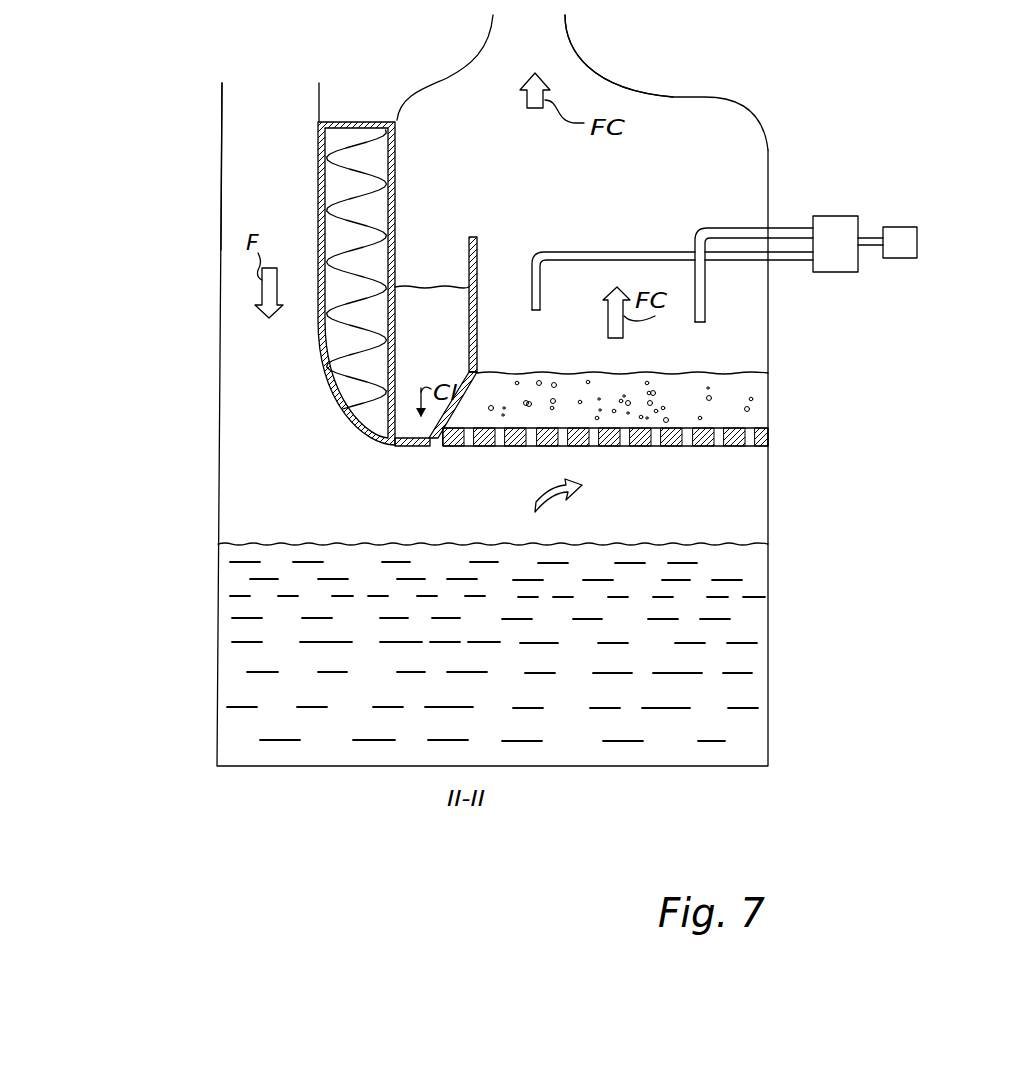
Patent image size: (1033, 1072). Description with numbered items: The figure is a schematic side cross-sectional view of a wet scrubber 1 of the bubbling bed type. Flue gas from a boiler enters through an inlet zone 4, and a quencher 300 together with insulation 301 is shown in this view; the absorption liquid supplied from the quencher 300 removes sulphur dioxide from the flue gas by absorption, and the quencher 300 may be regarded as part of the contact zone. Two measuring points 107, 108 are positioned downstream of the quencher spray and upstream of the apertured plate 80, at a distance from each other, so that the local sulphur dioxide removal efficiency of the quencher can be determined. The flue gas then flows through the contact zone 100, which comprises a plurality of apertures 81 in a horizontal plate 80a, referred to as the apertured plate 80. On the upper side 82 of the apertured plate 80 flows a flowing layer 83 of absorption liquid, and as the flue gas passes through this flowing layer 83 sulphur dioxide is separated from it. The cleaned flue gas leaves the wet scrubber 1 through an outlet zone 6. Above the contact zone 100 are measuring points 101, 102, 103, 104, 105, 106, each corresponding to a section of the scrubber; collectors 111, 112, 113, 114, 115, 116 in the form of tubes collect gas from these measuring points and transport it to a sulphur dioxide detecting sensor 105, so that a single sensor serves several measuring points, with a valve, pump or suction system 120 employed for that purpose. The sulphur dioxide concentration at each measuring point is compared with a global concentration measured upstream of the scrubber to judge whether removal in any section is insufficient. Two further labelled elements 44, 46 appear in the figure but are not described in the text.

The wet scrubber 1 is at (348, 803).
The inlet zone 4 is at (275, 103).
The outlet zone 6 is at (582, 67).
The liquid bath 44 is at (427, 610).
The plate support 46 is at (734, 448).
The apertured plate 80 is at (677, 451).
The horizontal plate 80a is at (623, 465).
The apertures 81 is at (623, 465).
The upper side 82 is at (622, 370).
The flowing layer of absorption liquid 83 is at (580, 372).
The contact zone 100 is at (662, 371).
The measuring point 101 is at (787, 290).
The measuring point 102 is at (787, 290).
The measuring point 103 is at (787, 290).
The measuring point 104 is at (708, 249).
The measuring point / sulphur dioxide detecting sensor 105 is at (708, 249).
The measuring point 106 is at (668, 250).
The measuring point 107 is at (405, 610).
The measuring point 108 is at (491, 512).
The collector 111 is at (685, 249).
The collector 112 is at (685, 249).
The collector 113 is at (685, 249).
The collector 114 is at (702, 249).
The collector 115 is at (702, 249).
The collector 116 is at (702, 249).
The valve, pump or suction system 120 is at (836, 234).
The quencher 300 is at (362, 284).
The insulation 301 is at (340, 193).